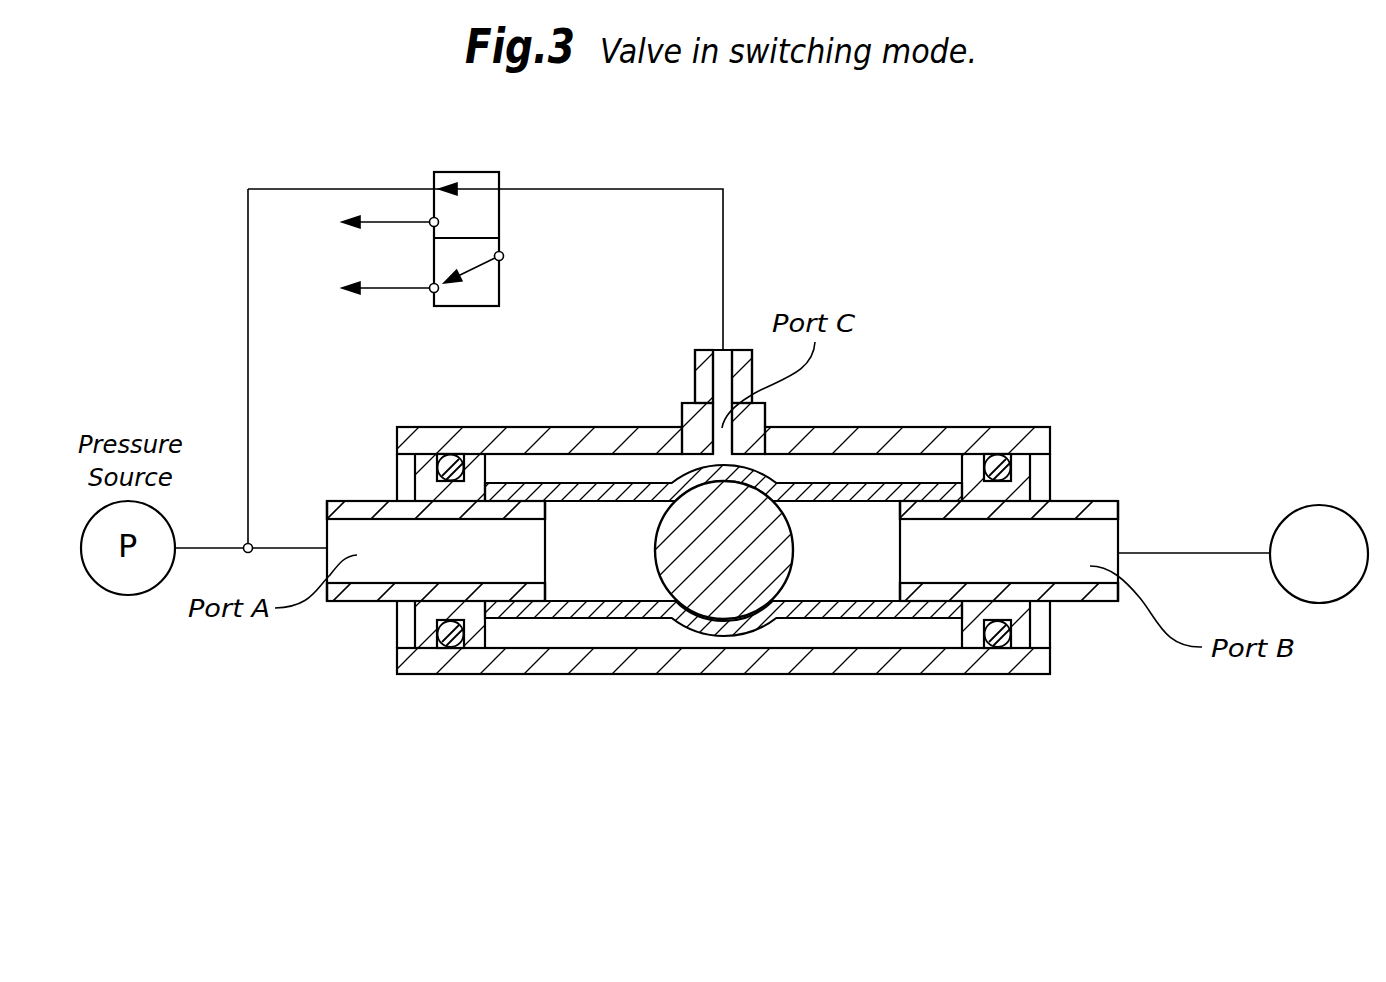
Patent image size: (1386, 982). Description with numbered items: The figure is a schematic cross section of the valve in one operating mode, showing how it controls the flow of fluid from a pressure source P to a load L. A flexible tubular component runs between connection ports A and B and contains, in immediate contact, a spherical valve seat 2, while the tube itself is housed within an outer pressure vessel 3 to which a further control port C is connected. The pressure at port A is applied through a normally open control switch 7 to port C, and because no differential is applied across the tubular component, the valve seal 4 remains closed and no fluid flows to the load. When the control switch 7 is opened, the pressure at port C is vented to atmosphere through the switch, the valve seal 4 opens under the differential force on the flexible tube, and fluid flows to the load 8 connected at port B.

The spherical valve seat 2 is at (715, 542).
The outer pressure vessel 3 is at (873, 437).
The valve seal 4 is at (680, 502).
The control switch 7 is at (477, 205).
The load 8 is at (1328, 527).